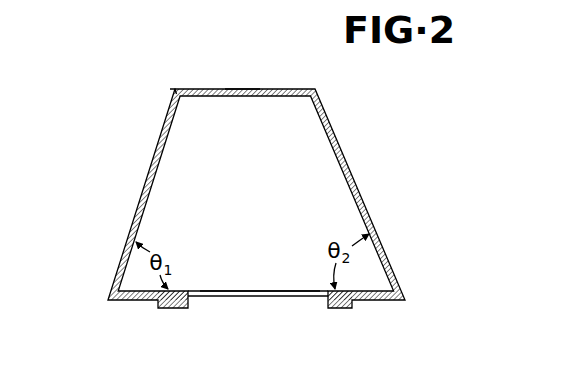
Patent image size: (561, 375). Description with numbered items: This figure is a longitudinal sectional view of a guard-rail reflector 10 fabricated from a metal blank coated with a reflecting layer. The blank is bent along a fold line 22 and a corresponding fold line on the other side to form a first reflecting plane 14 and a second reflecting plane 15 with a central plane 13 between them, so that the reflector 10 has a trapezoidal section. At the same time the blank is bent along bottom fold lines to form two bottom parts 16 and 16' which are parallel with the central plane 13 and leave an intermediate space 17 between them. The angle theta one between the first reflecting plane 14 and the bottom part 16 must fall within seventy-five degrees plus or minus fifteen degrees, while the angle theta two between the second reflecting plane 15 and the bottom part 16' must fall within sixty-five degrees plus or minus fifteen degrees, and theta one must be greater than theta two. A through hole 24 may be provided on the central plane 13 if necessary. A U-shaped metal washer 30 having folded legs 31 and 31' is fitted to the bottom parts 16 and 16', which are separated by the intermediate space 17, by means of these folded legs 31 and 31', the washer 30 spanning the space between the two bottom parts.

The reflector 10 is at (334, 105).
The central plane 13 is at (287, 90).
The first reflecting plane 14 is at (156, 150).
The second reflecting plane 15 is at (346, 160).
The bottom part 16 is at (148, 313).
The bottom part 16' is at (366, 313).
The intermediate space 17 is at (240, 297).
The fold line 22 is at (175, 90).
The through hole 24 is at (242, 91).
The U-shaped metal washer 30 is at (245, 290).
The folded leg 31 is at (175, 313).
The folded leg 31' is at (327, 313).